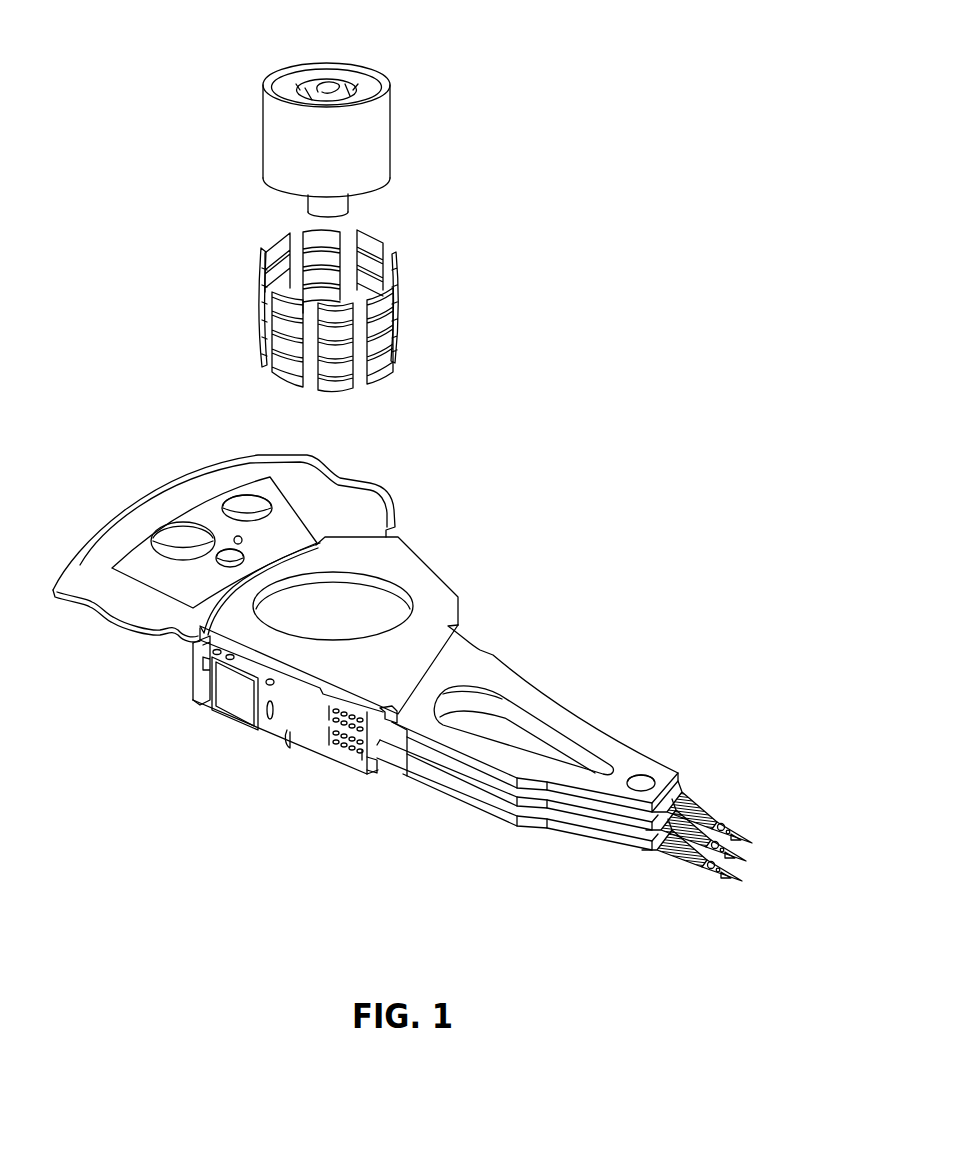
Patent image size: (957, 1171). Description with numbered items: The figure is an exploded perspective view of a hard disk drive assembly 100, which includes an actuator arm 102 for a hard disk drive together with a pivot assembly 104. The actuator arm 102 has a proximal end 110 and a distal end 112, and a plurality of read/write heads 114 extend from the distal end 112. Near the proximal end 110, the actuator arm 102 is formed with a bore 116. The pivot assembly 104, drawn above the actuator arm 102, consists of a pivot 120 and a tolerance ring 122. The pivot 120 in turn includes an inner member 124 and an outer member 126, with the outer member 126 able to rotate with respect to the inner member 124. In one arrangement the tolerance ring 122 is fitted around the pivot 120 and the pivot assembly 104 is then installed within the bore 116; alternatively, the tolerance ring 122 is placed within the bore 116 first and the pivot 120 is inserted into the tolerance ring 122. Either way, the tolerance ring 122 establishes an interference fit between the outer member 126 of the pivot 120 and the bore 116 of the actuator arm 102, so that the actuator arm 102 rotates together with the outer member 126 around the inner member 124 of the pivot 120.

The hard disk drive assembly 100 is at (595, 187).
The actuator arm 102 is at (385, 545).
The pivot assembly 104 is at (240, 53).
The proximal end 110 is at (173, 642).
The distal end 112 is at (623, 807).
The read/write heads 114 is at (710, 867).
The bore 116 is at (373, 590).
The pivot 120 is at (393, 165).
The tolerance ring 122 is at (388, 333).
The inner member 124 is at (328, 86).
The outer member 126 is at (357, 133).